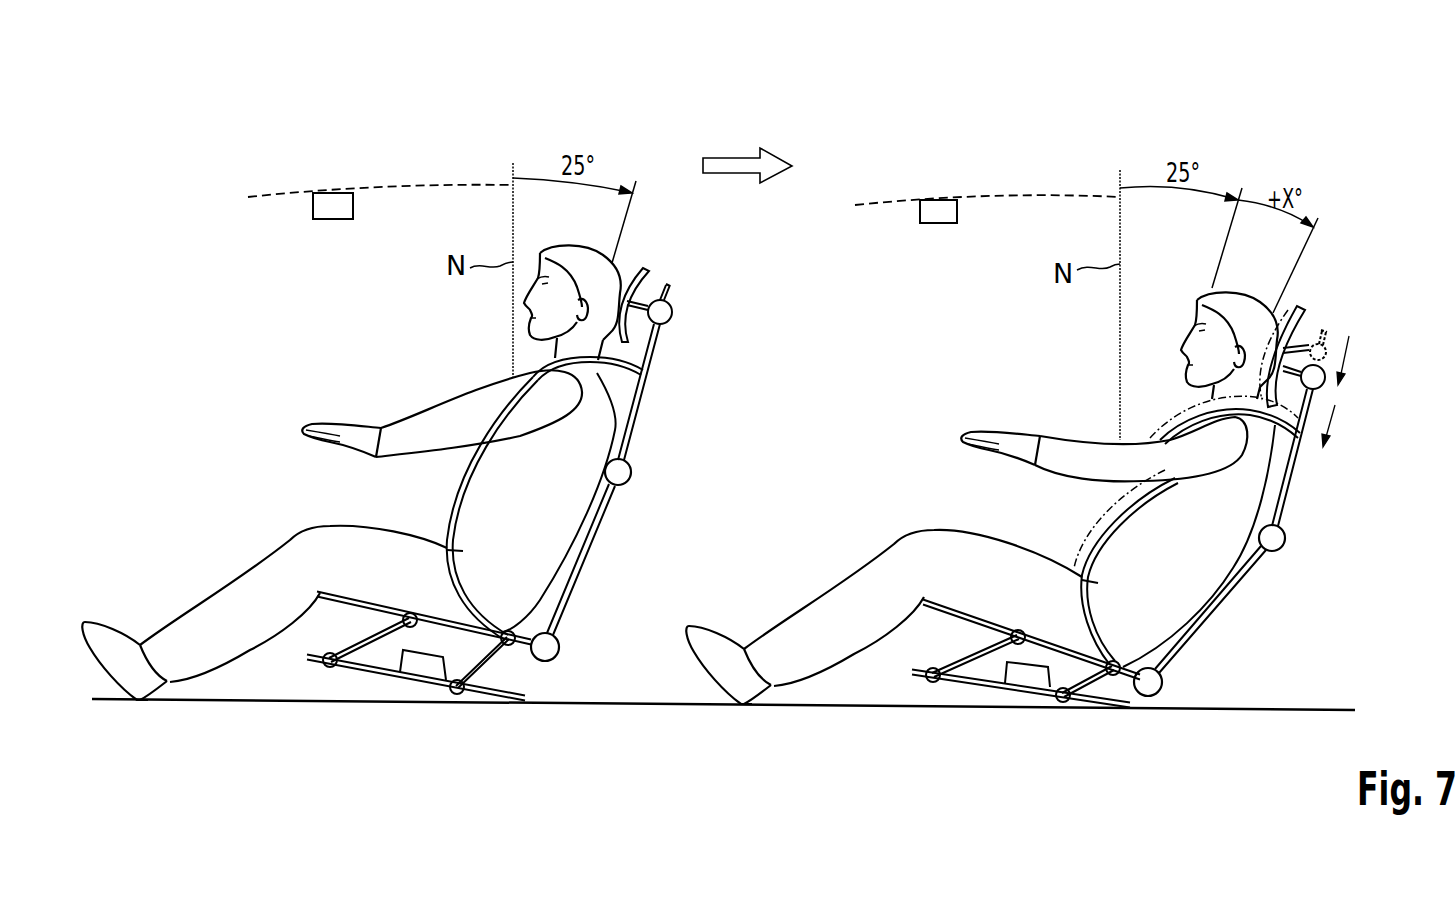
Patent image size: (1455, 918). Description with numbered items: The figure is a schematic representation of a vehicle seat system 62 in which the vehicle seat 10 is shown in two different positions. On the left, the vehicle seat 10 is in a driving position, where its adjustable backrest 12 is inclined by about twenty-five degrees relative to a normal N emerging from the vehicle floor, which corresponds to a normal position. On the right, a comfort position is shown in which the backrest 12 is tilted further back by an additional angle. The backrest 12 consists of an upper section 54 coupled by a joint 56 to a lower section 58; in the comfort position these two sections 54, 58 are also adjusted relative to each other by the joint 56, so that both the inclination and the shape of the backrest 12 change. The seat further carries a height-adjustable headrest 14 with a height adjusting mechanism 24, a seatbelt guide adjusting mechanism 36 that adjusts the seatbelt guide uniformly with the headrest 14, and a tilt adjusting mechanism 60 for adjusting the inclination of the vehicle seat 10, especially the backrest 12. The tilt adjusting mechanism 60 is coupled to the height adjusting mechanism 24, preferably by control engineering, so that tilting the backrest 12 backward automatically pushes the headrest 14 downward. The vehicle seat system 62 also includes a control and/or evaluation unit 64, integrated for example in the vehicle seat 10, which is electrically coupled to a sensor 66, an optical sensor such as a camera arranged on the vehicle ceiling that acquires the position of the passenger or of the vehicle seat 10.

The vehicle seat 10 is at (678, 469).
The backrest 12 is at (631, 444).
The headrest 14 is at (645, 268).
The height adjusting mechanism 24 is at (703, 315).
The seatbelt guide adjusting mechanism 36 is at (680, 366).
The upper section 54 is at (641, 408).
The joint 56 is at (646, 487).
The lower section 58 is at (565, 615).
The tilt adjusting mechanism 60 is at (626, 502).
The vehicle seat system 62 is at (275, 162).
The control and/or evaluation unit 64 is at (418, 670).
The sensor 66 is at (336, 203).